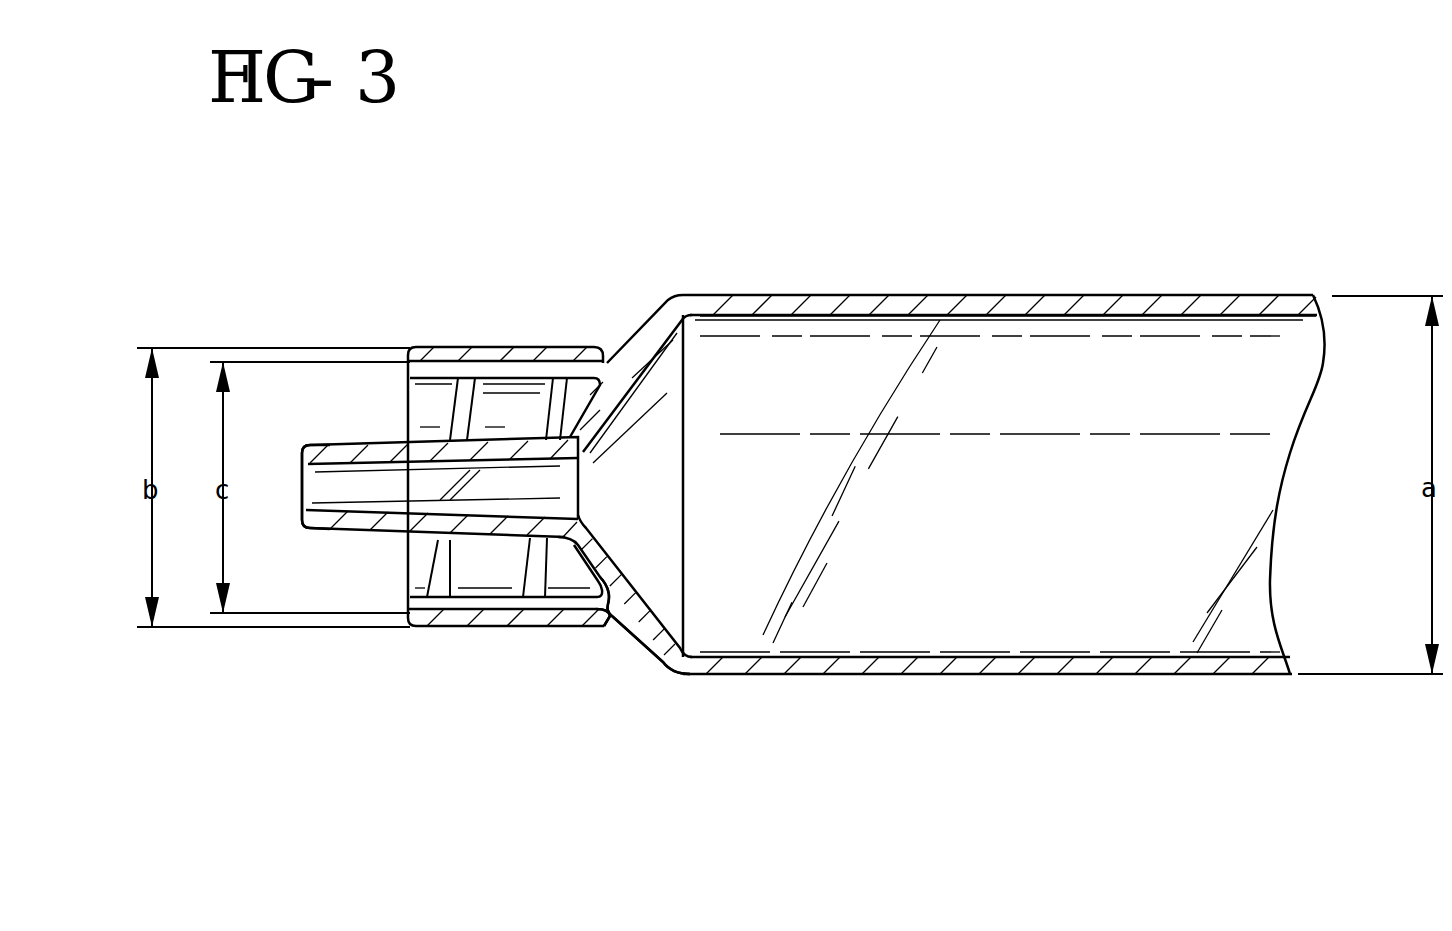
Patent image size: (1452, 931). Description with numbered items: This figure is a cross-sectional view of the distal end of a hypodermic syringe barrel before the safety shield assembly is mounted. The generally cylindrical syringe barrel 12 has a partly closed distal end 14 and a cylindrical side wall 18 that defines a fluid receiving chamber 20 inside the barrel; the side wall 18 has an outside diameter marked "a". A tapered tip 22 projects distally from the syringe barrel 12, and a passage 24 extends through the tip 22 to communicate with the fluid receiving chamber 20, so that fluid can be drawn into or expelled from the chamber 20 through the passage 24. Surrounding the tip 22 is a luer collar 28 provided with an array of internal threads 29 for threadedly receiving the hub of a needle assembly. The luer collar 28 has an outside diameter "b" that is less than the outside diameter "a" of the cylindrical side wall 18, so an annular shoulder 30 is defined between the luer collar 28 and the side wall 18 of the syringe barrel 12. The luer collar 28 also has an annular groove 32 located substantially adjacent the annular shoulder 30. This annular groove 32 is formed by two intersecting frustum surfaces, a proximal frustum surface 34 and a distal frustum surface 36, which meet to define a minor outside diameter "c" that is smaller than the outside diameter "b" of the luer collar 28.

The syringe barrel 12 is at (1018, 292).
The distal end 14 is at (698, 293).
The cylindrical side wall 18 is at (925, 678).
The fluid receiving chamber 20 is at (1240, 315).
The tapered tip 22 is at (357, 533).
The passage 24 is at (312, 487).
The luer collar 28 is at (493, 345).
The internal threads 29 is at (460, 400).
The annular shoulder 30 is at (662, 662).
The annular groove 32 is at (611, 614).
The proximal frustum surface 34 is at (637, 637).
The distal frustum surface 36 is at (590, 633).